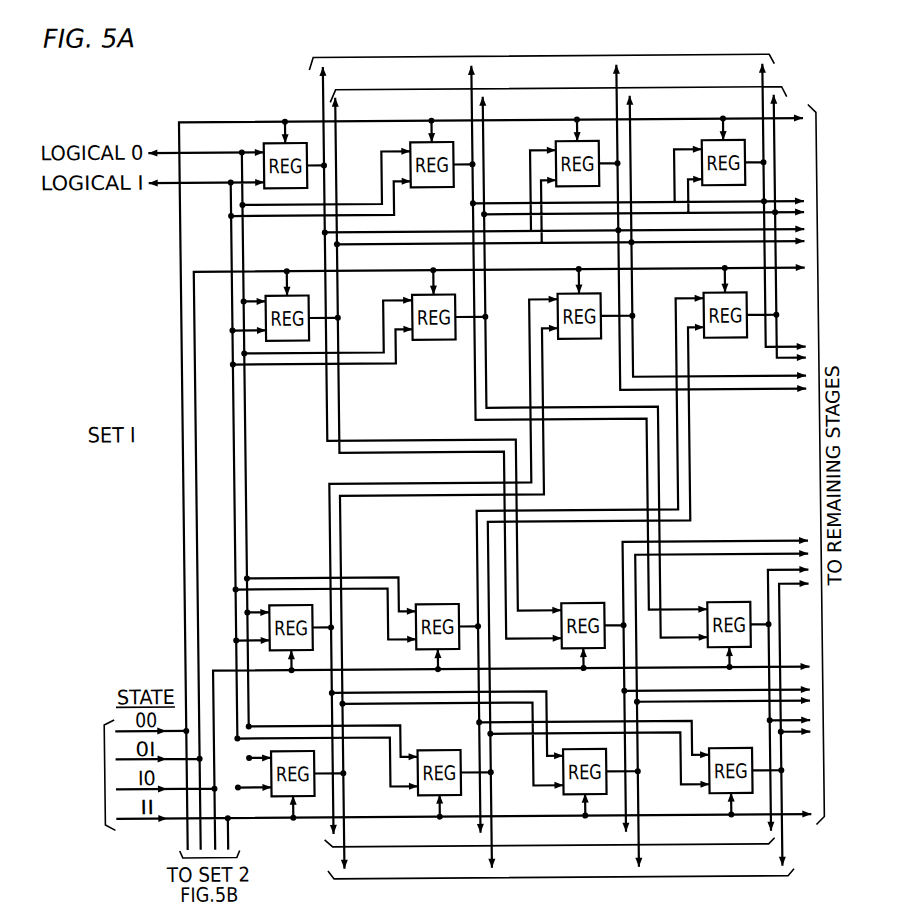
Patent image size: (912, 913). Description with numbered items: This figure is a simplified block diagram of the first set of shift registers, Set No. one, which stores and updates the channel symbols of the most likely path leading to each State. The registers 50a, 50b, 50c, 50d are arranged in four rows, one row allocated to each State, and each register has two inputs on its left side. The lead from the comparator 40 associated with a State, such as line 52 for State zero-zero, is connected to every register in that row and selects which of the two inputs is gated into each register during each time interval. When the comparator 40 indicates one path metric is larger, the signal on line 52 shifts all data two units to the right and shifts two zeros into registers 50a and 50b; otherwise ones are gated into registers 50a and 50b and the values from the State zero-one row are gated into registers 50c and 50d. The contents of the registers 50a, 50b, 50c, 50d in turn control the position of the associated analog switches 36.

The register 50a is at (285, 750).
The register 50b is at (435, 749).
The register 50c is at (584, 748).
The register 50d is at (727, 747).
The line 52 is at (181, 577).
The analog switches 36 is at (552, 471).
The comparator 40 is at (66, 778).